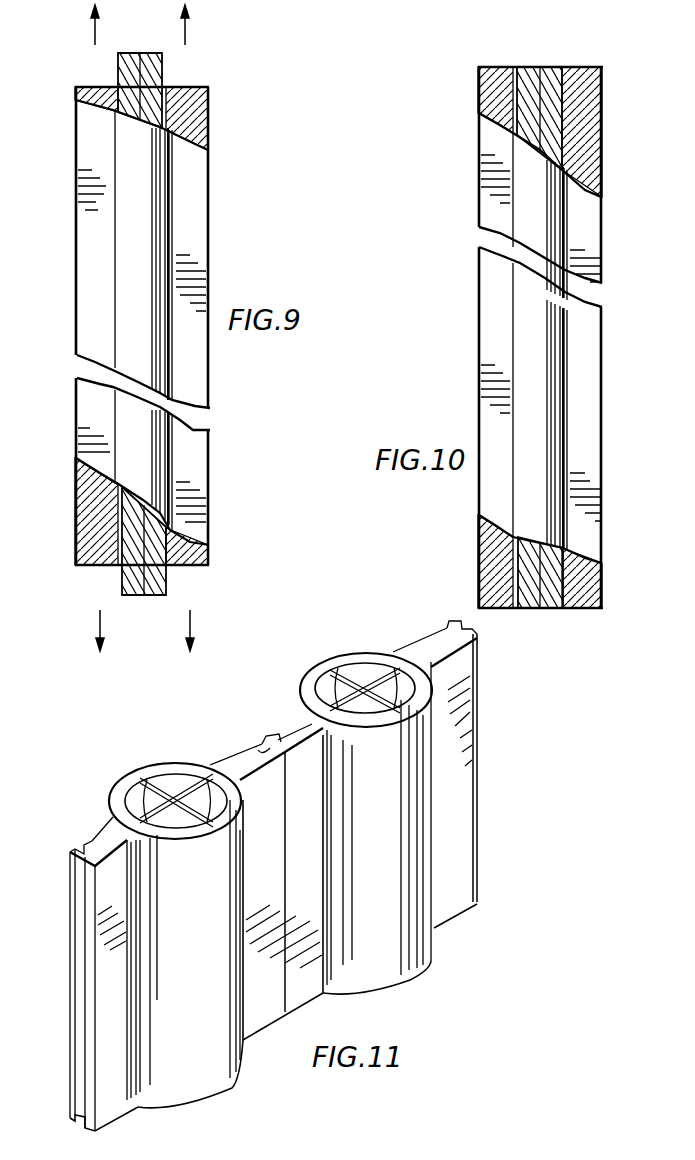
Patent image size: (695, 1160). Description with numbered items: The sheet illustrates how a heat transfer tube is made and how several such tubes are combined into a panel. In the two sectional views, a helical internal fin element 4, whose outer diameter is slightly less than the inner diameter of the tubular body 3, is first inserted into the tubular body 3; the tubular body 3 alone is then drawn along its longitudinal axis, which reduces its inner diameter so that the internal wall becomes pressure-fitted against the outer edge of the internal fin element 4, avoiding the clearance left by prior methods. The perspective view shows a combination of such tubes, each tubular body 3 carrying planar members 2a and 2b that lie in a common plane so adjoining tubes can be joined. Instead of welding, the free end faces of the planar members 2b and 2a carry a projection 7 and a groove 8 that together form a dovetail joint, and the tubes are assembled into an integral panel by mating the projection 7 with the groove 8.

In FIG. 11, the planar member 2a is at (100, 838).
In FIG. 11, the planar member 2b is at (222, 768).
In FIG. 9, the tubular body 3 is at (139, 244).
In FIG. 10, the tubular body 3 is at (538, 355).
In FIG. 11, the tubular body 3 is at (137, 778).
In FIG. 9, the internal fin element 4 is at (138, 53).
In FIG. 10, the internal fin element 4 is at (555, 115).
In FIG. 11, the internal fin element 4 is at (170, 790).
In FIG. 11, the projection 7 is at (275, 740).
In FIG. 11, the groove 8 is at (255, 748).